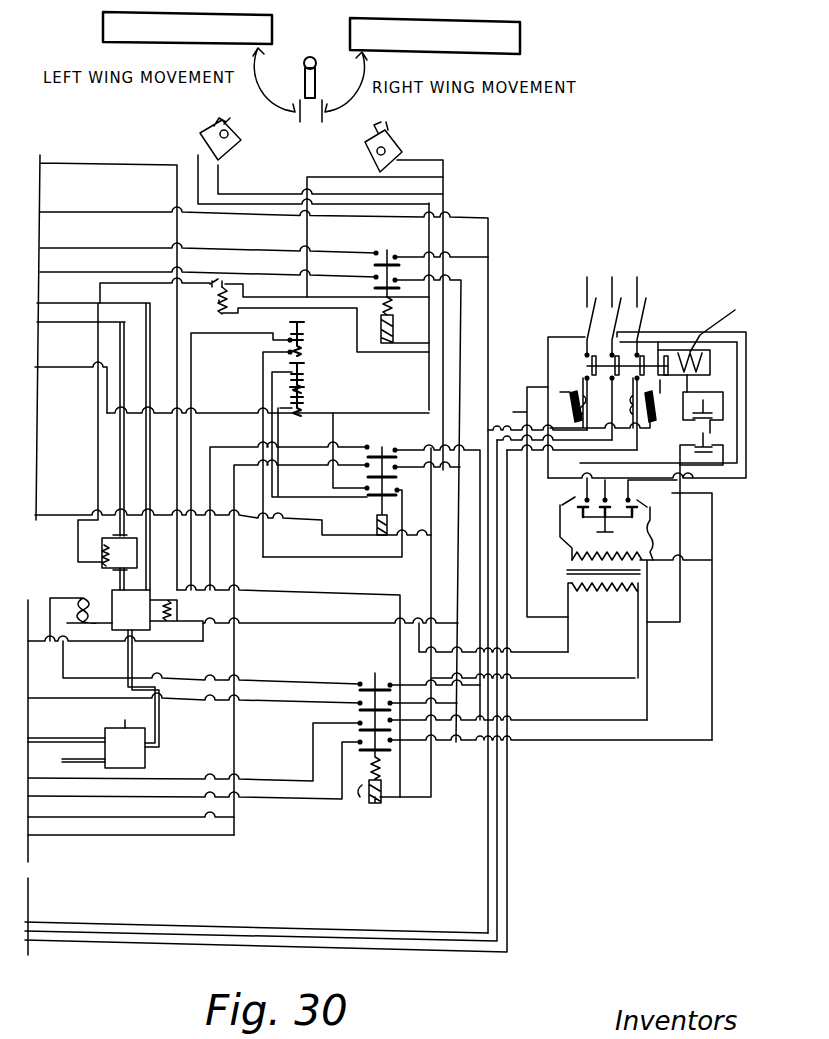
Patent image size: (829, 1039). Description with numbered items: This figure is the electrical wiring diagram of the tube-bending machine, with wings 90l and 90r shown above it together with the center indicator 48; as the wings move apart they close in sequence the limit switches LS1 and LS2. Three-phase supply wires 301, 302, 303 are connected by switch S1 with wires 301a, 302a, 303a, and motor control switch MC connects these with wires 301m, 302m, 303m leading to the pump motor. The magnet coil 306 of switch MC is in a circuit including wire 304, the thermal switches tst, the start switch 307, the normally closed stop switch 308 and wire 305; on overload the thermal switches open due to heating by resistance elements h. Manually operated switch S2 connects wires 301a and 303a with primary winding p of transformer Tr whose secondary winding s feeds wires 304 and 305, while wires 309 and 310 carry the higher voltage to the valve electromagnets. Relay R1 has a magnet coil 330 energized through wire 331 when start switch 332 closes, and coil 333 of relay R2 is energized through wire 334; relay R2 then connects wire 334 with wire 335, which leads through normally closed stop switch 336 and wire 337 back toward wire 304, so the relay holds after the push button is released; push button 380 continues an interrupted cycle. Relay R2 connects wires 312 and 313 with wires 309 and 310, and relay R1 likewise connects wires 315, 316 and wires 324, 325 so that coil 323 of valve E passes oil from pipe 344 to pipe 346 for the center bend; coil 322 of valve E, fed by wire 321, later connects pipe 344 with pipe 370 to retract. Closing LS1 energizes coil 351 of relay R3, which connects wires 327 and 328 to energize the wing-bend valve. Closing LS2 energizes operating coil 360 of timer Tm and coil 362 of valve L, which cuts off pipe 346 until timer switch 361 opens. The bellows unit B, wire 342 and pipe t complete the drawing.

The left wing 90l is at (103, 25).
The right wing 90r is at (522, 38).
The center indicator pin 48 is at (312, 56).
The limit switch LS1 is at (203, 130).
The limit switch LS2 is at (400, 148).
The wire 321 is at (128, 152).
The wire 310 is at (140, 212).
The wire 328 is at (140, 248).
The wire 327 is at (136, 272).
The pipe 370 is at (90, 291).
The switch 361 is at (232, 279).
The operating coil 360 is at (222, 296).
The timer Tm is at (204, 314).
The wire 305 is at (232, 190).
The relay R3 is at (406, 296).
The coil 351 is at (380, 292).
The wire 309 is at (428, 286).
The pipe 346 is at (70, 342).
The wire 337 is at (40, 374).
The wire 331 is at (191, 376).
The wire 304 is at (60, 512).
The start switch 332 is at (304, 338).
The stop switch 336 is at (305, 376).
The push button switch 380 is at (305, 402).
The wire 335 is at (336, 436).
The wire 313 is at (360, 452).
The coil 333 is at (372, 514).
The relay R2 is at (367, 492).
The wire 334 is at (296, 564).
The valve L is at (130, 552).
The coil 362 is at (102, 555).
The valve E is at (113, 590).
The control magnet coil 322 is at (167, 598).
The control magnet coil 323 is at (84, 601).
The pipe 344 is at (160, 730).
The bellows unit B is at (118, 728).
The pipe t is at (75, 762).
The conductor 342 is at (80, 740).
The wire 325 is at (104, 680).
The wire 324 is at (66, 705).
The wire 316 is at (280, 786).
The wire 315 is at (274, 804).
The wire 312 is at (156, 836).
The relay R1 is at (375, 753).
The magnet coil 330 is at (340, 809).
The wire 301m is at (82, 912).
The wire 302m is at (178, 932).
The wire 303m is at (100, 946).
The switch S1 is at (608, 338).
The wire 301 is at (585, 283).
The wire 302 is at (612, 278).
The wire 303 is at (638, 278).
The thermal switches tst is at (613, 403).
The resistance elements h is at (612, 399).
The wire 301a is at (548, 367).
The wire 302a is at (746, 334).
The wire 303a is at (737, 360).
The motor control switch MC is at (689, 340).
The magnet coil 306 is at (731, 323).
The switch 307 is at (718, 410).
The normally closed switch 308 is at (723, 448).
The manually operated switch S2 is at (607, 528).
The transformer Tr is at (624, 636).
The primary winding p is at (592, 548).
The secondary winding s is at (600, 592).